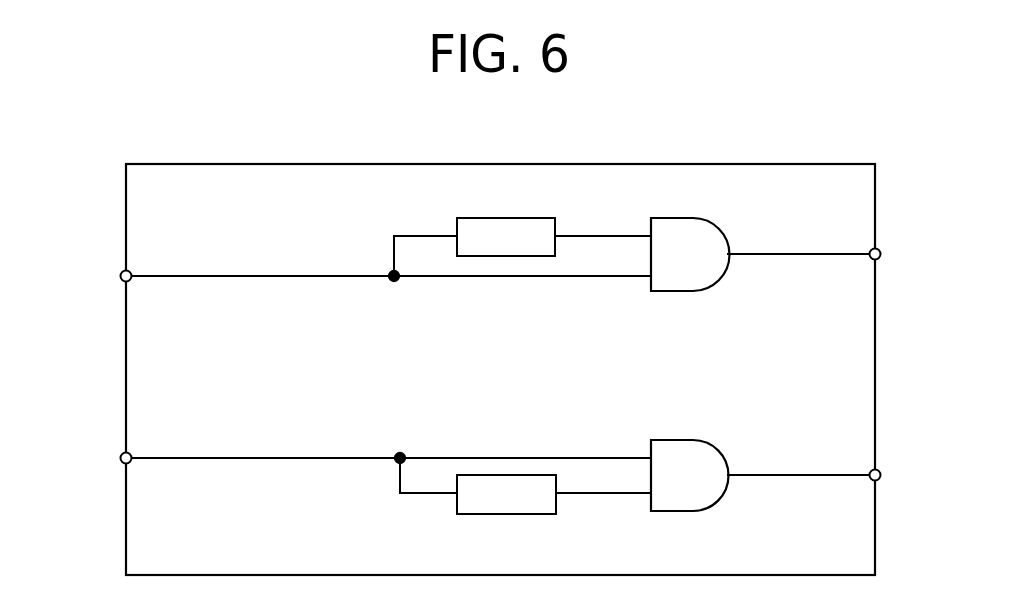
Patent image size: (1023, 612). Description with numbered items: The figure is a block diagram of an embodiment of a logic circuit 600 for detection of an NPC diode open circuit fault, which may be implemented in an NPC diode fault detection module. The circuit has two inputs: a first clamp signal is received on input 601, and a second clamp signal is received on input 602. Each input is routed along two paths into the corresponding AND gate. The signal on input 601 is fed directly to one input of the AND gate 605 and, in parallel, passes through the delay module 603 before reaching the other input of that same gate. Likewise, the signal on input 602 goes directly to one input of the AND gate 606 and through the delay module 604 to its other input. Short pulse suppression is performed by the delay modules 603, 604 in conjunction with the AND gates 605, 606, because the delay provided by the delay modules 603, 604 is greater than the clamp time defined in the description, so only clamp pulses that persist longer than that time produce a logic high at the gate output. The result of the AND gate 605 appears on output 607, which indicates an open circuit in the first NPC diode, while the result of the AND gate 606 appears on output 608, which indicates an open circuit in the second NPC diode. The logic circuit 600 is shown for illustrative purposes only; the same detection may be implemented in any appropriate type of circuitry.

The logic circuit 600 is at (193, 141).
The input 601 is at (120, 275).
The input 602 is at (120, 459).
The delay module 603 is at (493, 217).
The delay module 604 is at (506, 514).
The AND gate 605 is at (693, 291).
The AND gate 606 is at (710, 508).
The output 607 is at (880, 251).
The output 608 is at (880, 478).